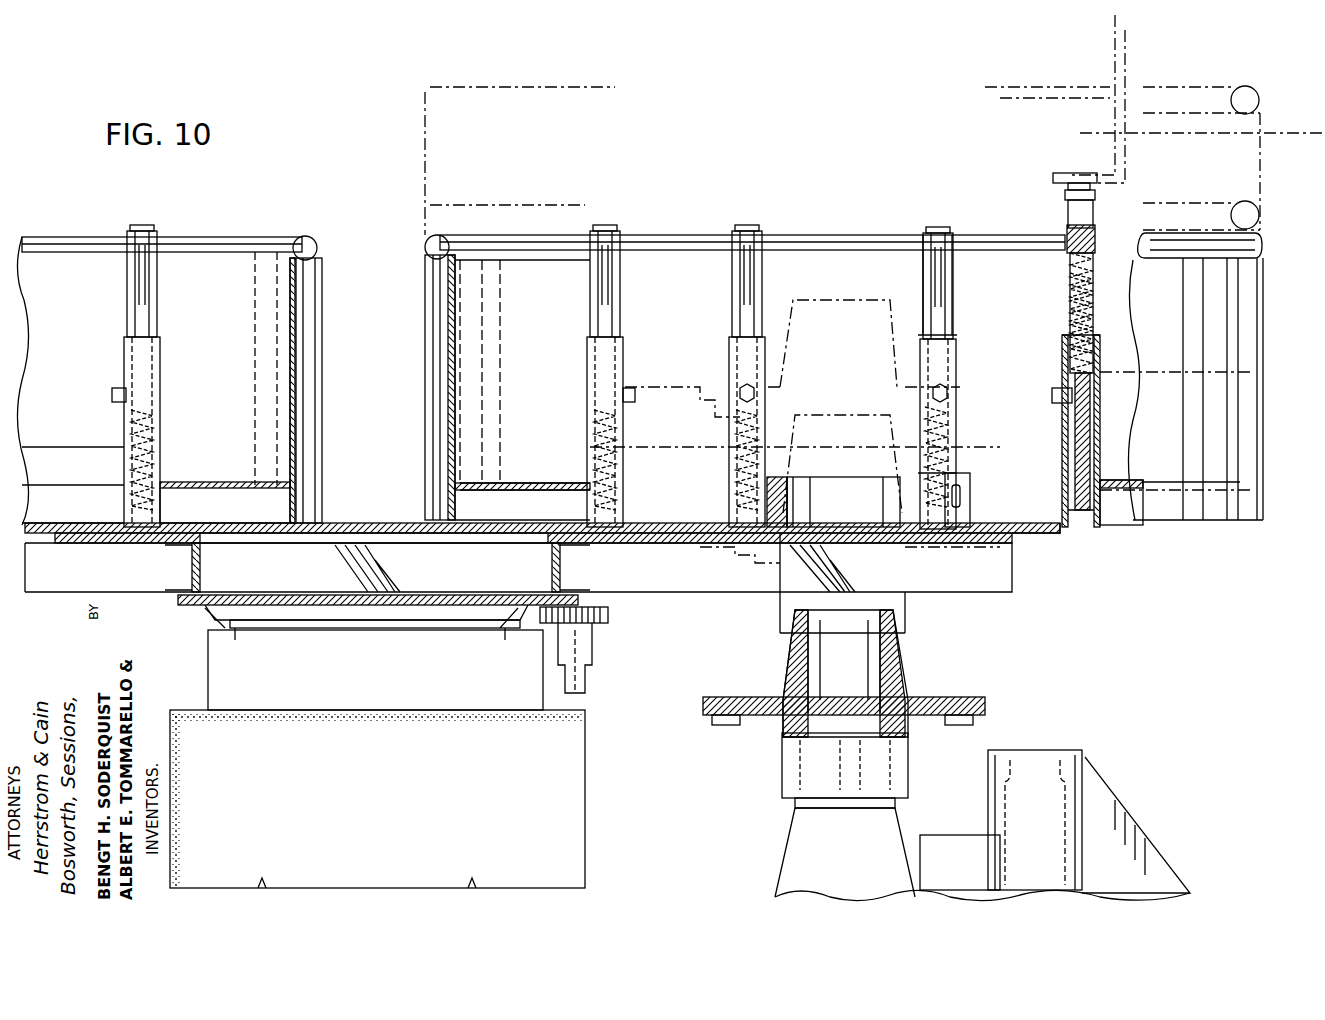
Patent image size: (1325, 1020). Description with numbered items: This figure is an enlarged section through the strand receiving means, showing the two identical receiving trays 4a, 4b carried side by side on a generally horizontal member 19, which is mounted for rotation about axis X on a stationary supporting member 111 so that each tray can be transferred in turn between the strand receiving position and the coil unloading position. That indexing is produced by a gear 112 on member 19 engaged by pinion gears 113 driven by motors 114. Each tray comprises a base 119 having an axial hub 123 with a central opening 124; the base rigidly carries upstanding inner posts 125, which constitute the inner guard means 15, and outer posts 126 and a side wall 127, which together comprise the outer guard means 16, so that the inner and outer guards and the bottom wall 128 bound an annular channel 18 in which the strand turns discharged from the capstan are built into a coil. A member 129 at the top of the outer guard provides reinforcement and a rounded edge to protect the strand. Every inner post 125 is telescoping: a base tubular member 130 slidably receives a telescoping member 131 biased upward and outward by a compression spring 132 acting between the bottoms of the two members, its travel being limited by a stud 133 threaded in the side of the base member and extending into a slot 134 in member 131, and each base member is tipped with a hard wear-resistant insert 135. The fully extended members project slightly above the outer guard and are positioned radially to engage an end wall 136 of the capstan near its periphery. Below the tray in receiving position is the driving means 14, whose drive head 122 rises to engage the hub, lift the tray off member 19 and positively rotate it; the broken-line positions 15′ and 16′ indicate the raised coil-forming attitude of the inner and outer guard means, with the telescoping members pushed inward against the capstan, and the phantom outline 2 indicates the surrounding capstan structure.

The phantom frame member 2 is at (1130, 45).
The raised broken-line position of outer guard means 16′ is at (1240, 86).
The receiving tray 4b is at (250, 237).
The receiving tray 4a is at (1263, 362).
The reinforcing member 129 is at (305, 236).
The inner posts 125 is at (160, 382).
The inner guard means 15 is at (921, 227).
The raised broken-line position of inner guard means 15′ is at (1097, 195).
The outer guard means 16 is at (418, 292).
The annular channel 18 is at (545, 275).
The outer posts 126 is at (428, 337).
The side wall 127 is at (465, 446).
The bottom wall 128 is at (560, 484).
The horizontal member 19 is at (1012, 585).
The base 119 is at (1050, 533).
The axial hub 123 is at (778, 478).
The central opening 124 is at (890, 485).
The end wall of the capstan 136 is at (1068, 172).
The insert 135 is at (1070, 230).
The slot 134 is at (1068, 312).
The compression spring 132 is at (1085, 310).
The stud 133 is at (1052, 398).
The telescoping member 131 is at (1065, 262).
The base tubular member 130 is at (957, 375).
The drive head 122 is at (905, 662).
The driving means 14 is at (780, 858).
The gear 112 is at (205, 618).
The pinion gears 113 is at (608, 616).
The motors 114 is at (592, 665).
The stationary supporting member 111 is at (545, 700).